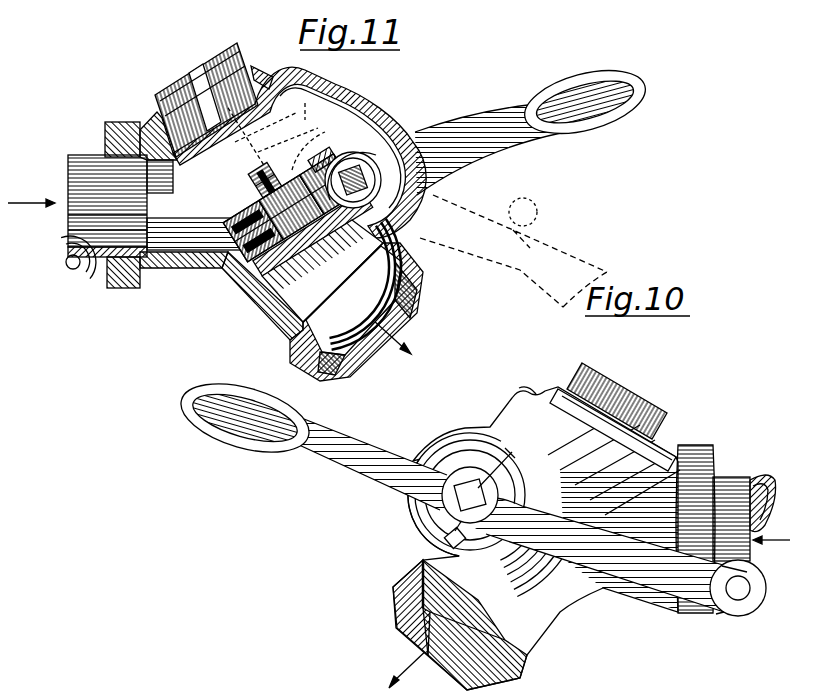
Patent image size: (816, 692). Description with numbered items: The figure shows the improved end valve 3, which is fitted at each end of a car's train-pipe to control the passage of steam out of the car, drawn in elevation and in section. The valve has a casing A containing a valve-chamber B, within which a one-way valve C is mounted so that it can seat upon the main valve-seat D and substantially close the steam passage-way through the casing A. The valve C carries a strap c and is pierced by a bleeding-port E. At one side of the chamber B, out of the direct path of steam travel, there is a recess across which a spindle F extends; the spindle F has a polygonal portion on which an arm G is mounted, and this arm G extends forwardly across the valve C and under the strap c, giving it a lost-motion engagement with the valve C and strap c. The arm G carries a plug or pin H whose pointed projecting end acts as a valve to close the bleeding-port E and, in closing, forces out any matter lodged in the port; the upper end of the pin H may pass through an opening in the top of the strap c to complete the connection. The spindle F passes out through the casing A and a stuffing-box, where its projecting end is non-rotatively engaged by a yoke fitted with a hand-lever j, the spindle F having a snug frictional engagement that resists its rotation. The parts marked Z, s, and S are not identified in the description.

In FIG. 11, the inlet pipe Z is at (82, 157).
In FIG. 10, the inlet pipe Z is at (737, 481).
In FIG. 11, the casing A is at (353, 107).
In FIG. 10, the casing A is at (577, 603).
In FIG. 11, the valve-chamber B is at (187, 223).
In FIG. 11, the one-way valve C is at (280, 136).
In FIG. 11, the strap c is at (238, 183).
In FIG. 11, the main valve-seat D is at (250, 280).
In FIG. 11, the bleeding-port E is at (342, 300).
In FIG. 11, the spindle F is at (364, 171).
In FIG. 11, the arm G is at (338, 168).
In FIG. 11, the plug or pin H is at (187, 224).
In FIG. 11, the flange s is at (118, 290).
In FIG. 10, the flange S is at (698, 447).
In FIG. 11, the hand-lever j is at (530, 148).
In FIG. 10, the hand-lever j is at (361, 441).
In FIG. 10, the end valve 3 is at (520, 407).